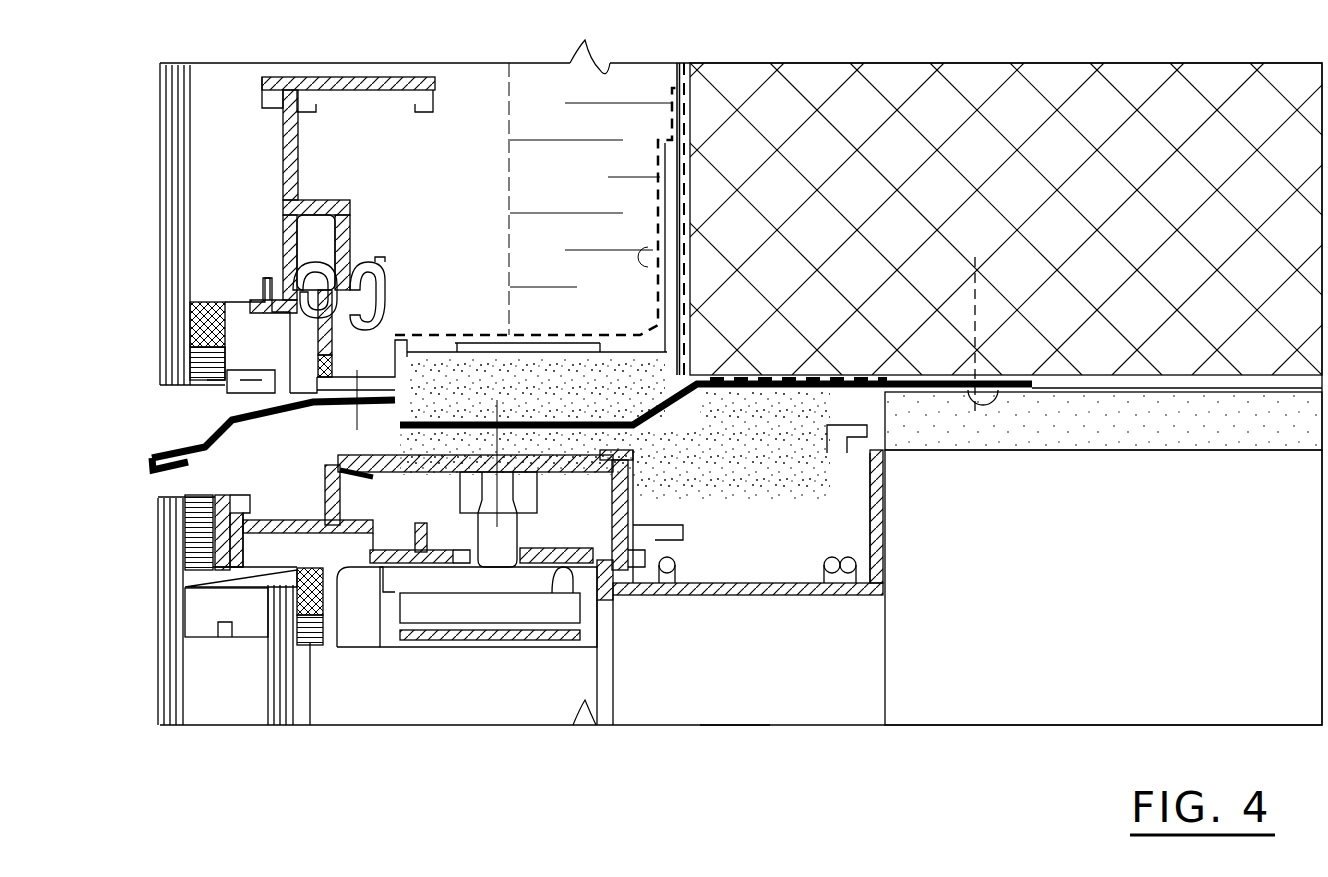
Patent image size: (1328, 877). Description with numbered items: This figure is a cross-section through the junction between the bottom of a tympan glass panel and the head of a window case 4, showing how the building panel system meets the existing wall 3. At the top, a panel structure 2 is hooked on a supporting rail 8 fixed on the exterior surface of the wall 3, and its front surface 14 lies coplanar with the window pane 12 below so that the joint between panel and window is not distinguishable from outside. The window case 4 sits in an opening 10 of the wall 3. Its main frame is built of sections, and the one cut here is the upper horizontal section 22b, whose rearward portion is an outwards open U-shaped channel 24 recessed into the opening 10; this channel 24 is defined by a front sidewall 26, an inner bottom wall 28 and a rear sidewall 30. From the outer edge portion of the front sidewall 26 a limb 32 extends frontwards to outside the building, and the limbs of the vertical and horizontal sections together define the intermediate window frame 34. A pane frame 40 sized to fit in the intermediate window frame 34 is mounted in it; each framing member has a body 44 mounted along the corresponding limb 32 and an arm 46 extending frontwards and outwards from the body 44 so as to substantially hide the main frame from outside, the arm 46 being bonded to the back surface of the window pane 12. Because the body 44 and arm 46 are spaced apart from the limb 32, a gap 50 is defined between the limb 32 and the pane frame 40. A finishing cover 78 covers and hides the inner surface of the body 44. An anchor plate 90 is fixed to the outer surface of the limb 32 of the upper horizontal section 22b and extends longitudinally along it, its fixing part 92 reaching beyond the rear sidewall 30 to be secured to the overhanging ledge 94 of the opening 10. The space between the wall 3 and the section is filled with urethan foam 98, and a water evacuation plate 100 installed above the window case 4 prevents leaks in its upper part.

The panel structure 2 is at (140, 192).
The wall 3 is at (1162, 214).
The window case 4 is at (145, 690).
The supporting rail 8 is at (497, 345).
The opening 10 is at (1156, 640).
The window pane 12 is at (244, 723).
The front surface 14 is at (160, 275).
The horizontal section 22b is at (790, 594).
The U-shaped channel 24 is at (780, 563).
The front sidewall 26 is at (665, 600).
The inner bottom wall 28 is at (735, 596).
The rear sidewall 30 is at (880, 555).
The limb 32 is at (493, 455).
The intermediate window frame 34 is at (527, 455).
The pane frame 40 is at (475, 637).
The body 44 is at (450, 628).
The arm 46 is at (338, 596).
The gap 50 is at (472, 535).
The finishing cover 78 is at (405, 640).
The anchor plate 90 is at (748, 378).
The fixing part 92 is at (947, 390).
The overhanging ledge 94 is at (873, 348).
The urethan foam 98 is at (752, 455).
The water evacuation plate 100 is at (240, 420).